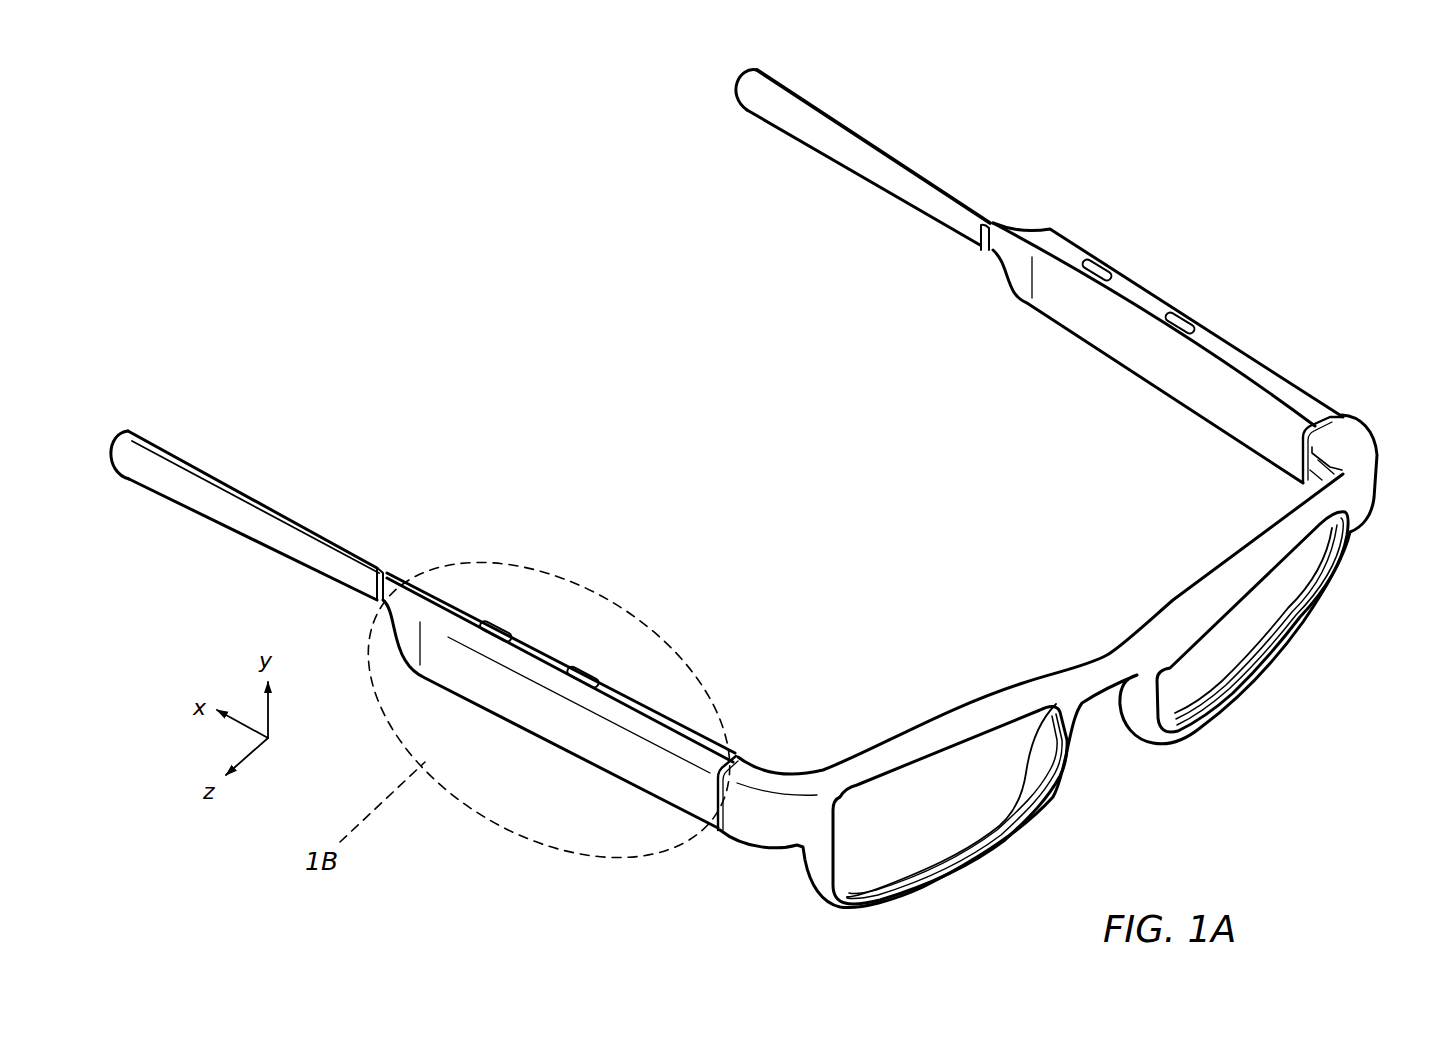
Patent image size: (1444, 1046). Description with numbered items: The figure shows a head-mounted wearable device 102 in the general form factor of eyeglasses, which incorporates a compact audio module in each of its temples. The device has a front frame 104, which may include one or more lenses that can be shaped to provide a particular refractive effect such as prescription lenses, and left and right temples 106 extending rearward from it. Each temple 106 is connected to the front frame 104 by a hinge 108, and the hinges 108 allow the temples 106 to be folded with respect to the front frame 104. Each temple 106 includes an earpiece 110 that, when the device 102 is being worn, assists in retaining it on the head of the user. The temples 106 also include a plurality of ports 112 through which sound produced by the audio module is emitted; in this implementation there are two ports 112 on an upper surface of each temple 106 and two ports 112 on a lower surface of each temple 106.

The head-mounted wearable device 102 is at (688, 83).
The front frame 104 is at (1162, 623).
The temple 106 is at (697, 733).
The hinge 108 is at (717, 845).
The earpiece 110 is at (197, 470).
The port 112 is at (498, 620).